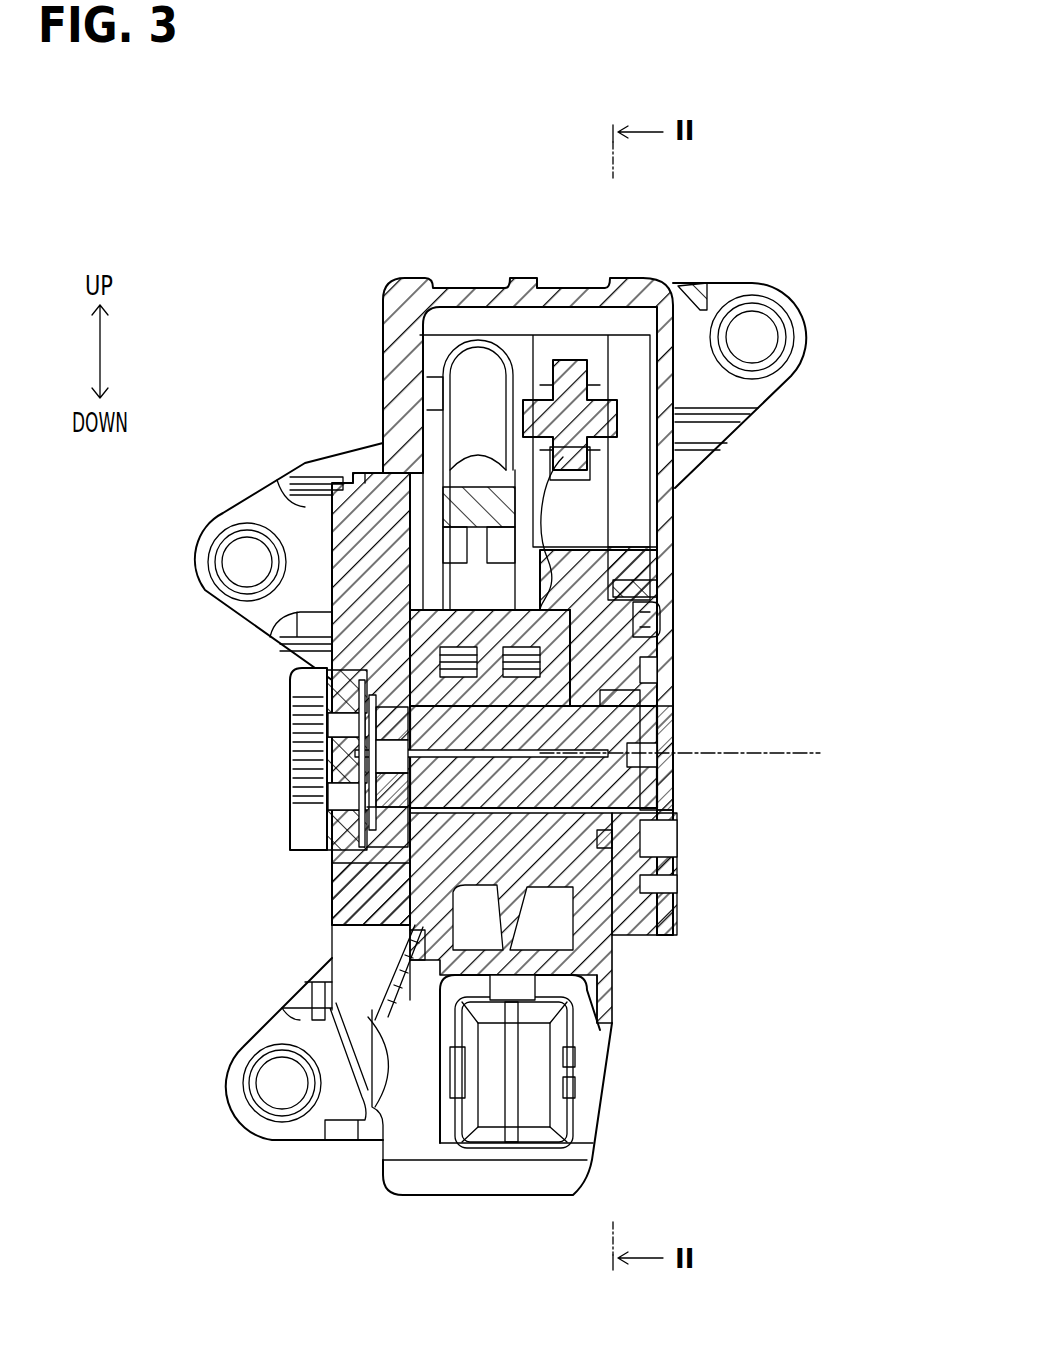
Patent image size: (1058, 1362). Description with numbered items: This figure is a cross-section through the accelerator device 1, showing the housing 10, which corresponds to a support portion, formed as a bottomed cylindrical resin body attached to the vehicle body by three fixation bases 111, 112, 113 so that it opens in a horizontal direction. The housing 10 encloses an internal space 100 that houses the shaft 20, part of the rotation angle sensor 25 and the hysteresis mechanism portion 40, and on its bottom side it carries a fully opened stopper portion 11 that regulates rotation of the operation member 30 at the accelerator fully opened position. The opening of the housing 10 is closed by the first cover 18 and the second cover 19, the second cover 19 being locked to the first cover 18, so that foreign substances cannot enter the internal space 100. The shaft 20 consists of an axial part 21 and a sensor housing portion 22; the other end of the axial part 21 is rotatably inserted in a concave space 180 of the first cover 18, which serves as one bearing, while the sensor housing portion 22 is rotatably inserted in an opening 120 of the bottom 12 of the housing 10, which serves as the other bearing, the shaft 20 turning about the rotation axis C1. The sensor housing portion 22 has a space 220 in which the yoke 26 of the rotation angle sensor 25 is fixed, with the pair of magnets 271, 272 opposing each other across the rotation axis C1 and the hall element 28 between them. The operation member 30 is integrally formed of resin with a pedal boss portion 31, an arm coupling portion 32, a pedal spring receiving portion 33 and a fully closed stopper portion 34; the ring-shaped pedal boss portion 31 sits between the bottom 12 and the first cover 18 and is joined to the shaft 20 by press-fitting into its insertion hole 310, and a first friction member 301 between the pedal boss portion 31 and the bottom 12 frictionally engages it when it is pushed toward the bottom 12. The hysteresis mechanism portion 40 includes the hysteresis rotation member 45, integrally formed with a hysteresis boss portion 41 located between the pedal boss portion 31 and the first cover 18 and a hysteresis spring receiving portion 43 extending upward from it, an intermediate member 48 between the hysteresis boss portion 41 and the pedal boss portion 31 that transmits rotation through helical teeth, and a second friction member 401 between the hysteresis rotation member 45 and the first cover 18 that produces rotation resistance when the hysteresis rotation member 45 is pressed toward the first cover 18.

The accelerator device 1 is at (296, 246).
The housing 10 is at (372, 342).
The fully opened stopper portion 11 is at (515, 1190).
The bottom 12 is at (397, 413).
The first cover 18 is at (670, 737).
The second cover 19 is at (677, 512).
The shaft 20 is at (672, 782).
The axial part 21 is at (550, 785).
The sensor housing portion 22 is at (387, 697).
The rotation angle sensor 25 is at (282, 674).
The yoke 26 is at (377, 713).
The hall element 28 is at (393, 773).
The operation member 30 is at (426, 589).
The pedal boss portion 31 is at (447, 880).
The arm coupling portion 32 is at (325, 998).
The pedal spring receiving portion 33 is at (457, 517).
The fully closed stopper portion 34 is at (478, 385).
The hysteresis mechanism portion 40 is at (617, 593).
The hysteresis boss portion 41 is at (590, 660).
The hysteresis spring receiving portion 43 is at (612, 424).
The hysteresis rotation member 45 is at (627, 623).
The intermediate member 48 is at (545, 848).
The internal space 100 is at (624, 318).
The fixation base 111 is at (235, 1090).
The fixation base 112 is at (198, 561).
The fixation base 113 is at (806, 343).
The opening 120 is at (390, 815).
The concave space 180 is at (633, 718).
The space 220 is at (372, 788).
The magnet 271 is at (393, 750).
The magnet 272 is at (373, 810).
The first friction member 301 is at (377, 848).
The insertion hole 310 is at (618, 700).
The second friction member 401 is at (617, 838).
The rotation axis C1 is at (808, 760).